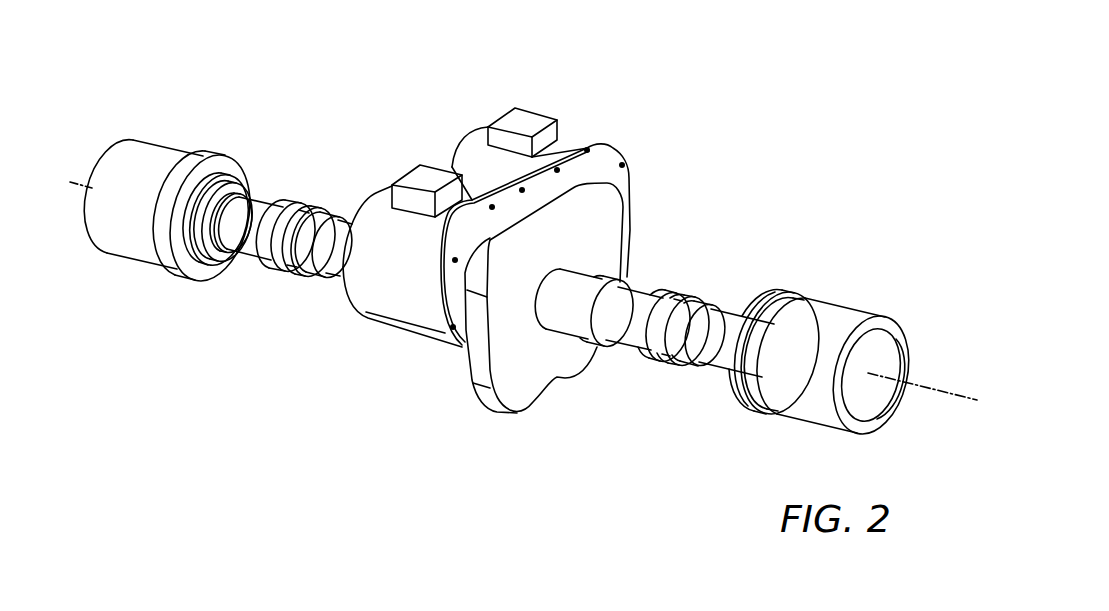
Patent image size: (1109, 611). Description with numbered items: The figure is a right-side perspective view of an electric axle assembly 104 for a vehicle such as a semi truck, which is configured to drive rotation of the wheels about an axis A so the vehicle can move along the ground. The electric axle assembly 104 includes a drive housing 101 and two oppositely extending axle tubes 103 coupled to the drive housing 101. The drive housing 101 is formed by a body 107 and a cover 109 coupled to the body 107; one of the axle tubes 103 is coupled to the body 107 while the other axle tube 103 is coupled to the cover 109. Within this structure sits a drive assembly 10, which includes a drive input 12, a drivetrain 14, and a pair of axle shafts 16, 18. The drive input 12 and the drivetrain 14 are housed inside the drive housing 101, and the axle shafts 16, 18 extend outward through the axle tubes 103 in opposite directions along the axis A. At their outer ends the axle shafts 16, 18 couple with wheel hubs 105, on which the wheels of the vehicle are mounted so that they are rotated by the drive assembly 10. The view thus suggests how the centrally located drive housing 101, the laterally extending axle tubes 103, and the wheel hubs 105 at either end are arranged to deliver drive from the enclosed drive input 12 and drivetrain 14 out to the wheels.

The drive assembly 10 is at (380, 222).
The drive input 12 is at (388, 288).
The drivetrain 14 is at (448, 350).
The axle shaft 16 is at (653, 326).
The axle shaft 18 is at (263, 258).
The drive housing 101 is at (518, 99).
The axle tubes 103 is at (312, 206).
The electric axle assembly 104 is at (835, 54).
The wheel hubs 105 is at (160, 131).
The body 107 is at (470, 162).
The cover 109 is at (603, 212).
The axis A is at (78, 182).